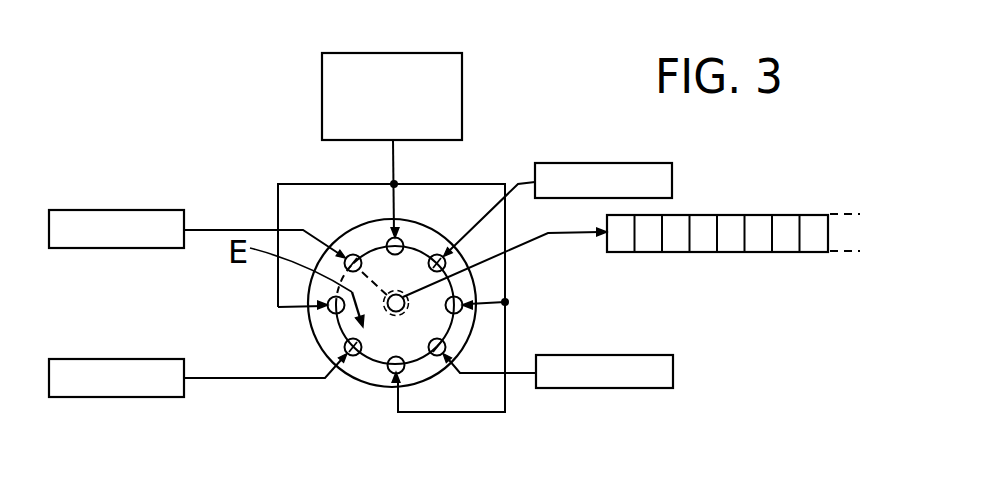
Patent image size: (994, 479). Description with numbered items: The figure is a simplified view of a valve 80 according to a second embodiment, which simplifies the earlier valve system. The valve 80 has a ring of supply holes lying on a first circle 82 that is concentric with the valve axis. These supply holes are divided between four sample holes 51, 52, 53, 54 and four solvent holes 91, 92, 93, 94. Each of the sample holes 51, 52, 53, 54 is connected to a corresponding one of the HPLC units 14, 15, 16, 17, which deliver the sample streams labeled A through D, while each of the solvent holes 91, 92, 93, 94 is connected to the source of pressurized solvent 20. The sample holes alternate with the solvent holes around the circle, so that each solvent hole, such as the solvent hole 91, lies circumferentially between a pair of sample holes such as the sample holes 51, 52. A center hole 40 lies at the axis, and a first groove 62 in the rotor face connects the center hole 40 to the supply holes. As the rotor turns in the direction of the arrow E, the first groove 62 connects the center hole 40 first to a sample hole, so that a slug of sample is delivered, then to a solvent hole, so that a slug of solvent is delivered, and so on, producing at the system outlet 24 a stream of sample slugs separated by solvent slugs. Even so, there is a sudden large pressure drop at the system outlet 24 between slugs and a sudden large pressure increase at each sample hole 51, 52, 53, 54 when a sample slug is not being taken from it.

The HPLC unit 14 is at (115, 210).
The HPLC unit 15 is at (102, 397).
The HPLC unit 16 is at (627, 388).
The HPLC unit 17 is at (617, 163).
The source of pressurized solvent 20 is at (462, 93).
The system outlet 24 is at (575, 233).
The center hole 40 is at (380, 362).
The sample hole 51 is at (348, 240).
The sample hole 52 is at (344, 348).
The sample hole 53 is at (436, 358).
The sample hole 54 is at (437, 252).
The first groove 62 is at (373, 256).
The valve 80 is at (480, 333).
The first circle 82 is at (392, 312).
The solvent hole 91 is at (318, 322).
The solvent hole 92 is at (392, 378).
The solvent hole 93 is at (458, 290).
The solvent hole 94 is at (429, 250).